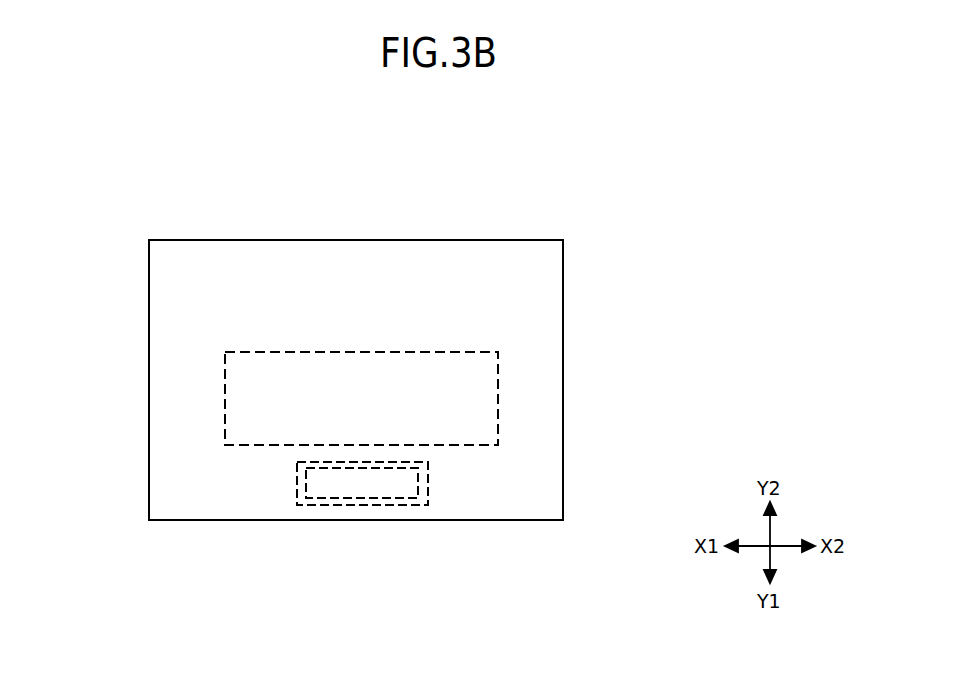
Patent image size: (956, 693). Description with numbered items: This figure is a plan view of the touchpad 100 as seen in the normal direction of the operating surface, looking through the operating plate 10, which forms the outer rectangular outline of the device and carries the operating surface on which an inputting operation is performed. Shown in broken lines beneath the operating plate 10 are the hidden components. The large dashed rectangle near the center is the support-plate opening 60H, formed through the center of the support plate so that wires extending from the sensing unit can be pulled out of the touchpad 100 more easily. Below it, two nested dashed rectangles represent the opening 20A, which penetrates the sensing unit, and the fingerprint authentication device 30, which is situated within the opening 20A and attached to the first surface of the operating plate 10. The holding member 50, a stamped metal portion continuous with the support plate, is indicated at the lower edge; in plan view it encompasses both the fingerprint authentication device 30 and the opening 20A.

The touchpad 100 is at (124, 176).
The operating plate 10 is at (537, 255).
The support-plate opening 60H is at (488, 400).
The holding member 50 is at (257, 505).
The fingerprint authentication device 30 is at (337, 490).
The opening 20A is at (385, 503).